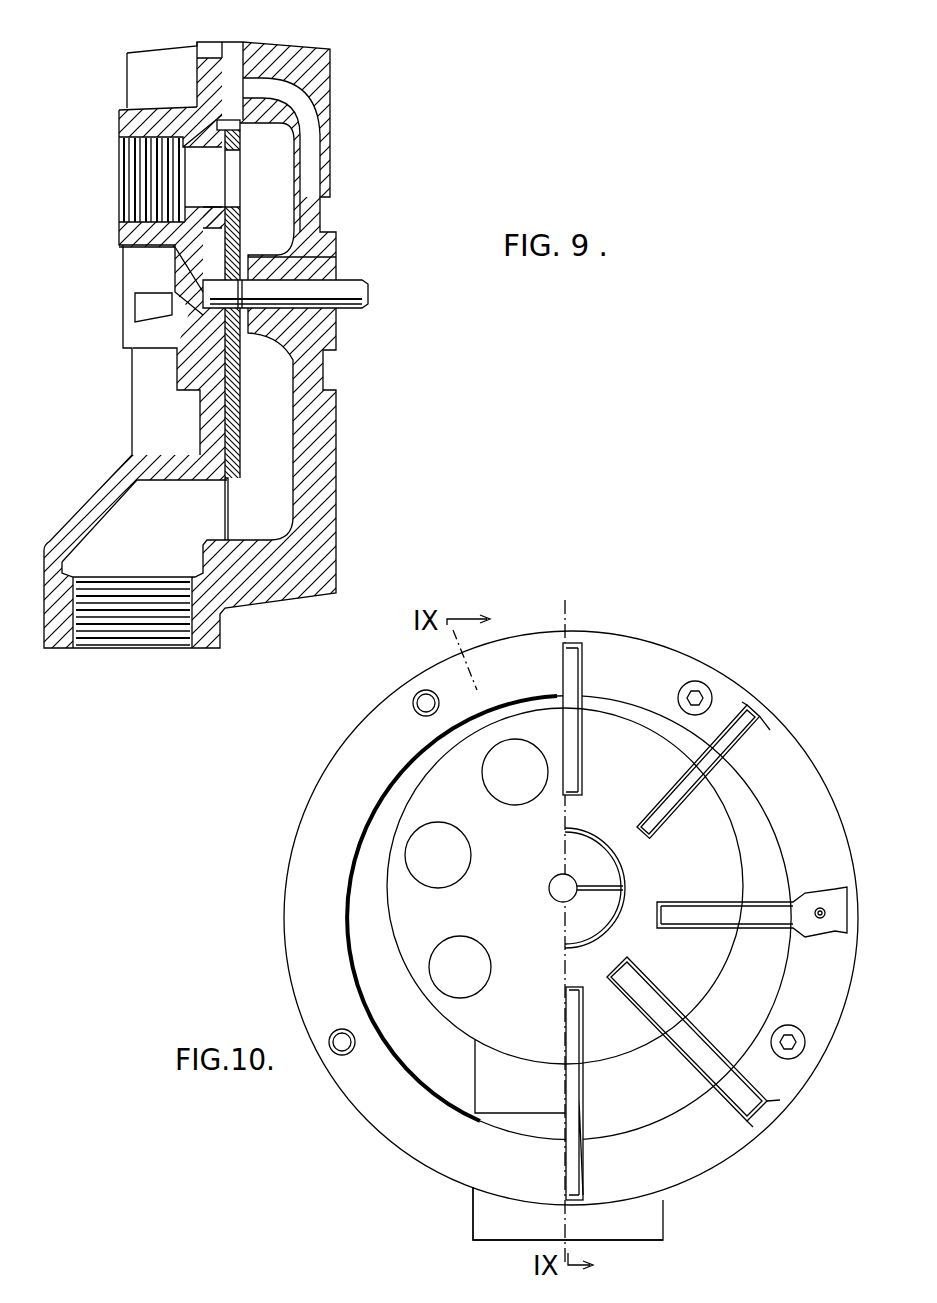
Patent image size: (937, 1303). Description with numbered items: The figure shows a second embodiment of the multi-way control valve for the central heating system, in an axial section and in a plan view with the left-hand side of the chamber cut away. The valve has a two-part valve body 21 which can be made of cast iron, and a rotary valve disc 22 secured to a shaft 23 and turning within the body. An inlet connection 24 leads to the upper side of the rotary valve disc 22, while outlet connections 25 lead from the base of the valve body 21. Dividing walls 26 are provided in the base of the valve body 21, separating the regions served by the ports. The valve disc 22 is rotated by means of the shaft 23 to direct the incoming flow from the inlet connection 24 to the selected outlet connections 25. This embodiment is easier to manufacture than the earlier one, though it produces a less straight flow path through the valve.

In FIG. 9, the valve body 21 is at (256, 575).
In FIG. 10, the valve body 21 is at (540, 655).
In FIG. 9, the rotary valve disc 22 is at (289, 425).
In FIG. 10, the rotary valve disc 22 is at (497, 1010).
In FIG. 9, the rotor shaft 23 is at (355, 287).
In FIG. 10, the rotor shaft 23 is at (540, 830).
In FIG. 9, the inlet connection 24 is at (157, 637).
In FIG. 10, the inlet connection 24 is at (518, 1240).
In FIG. 9, the outlet connections 25 is at (128, 185).
In FIG. 9, the dividing walls 26 is at (287, 181).